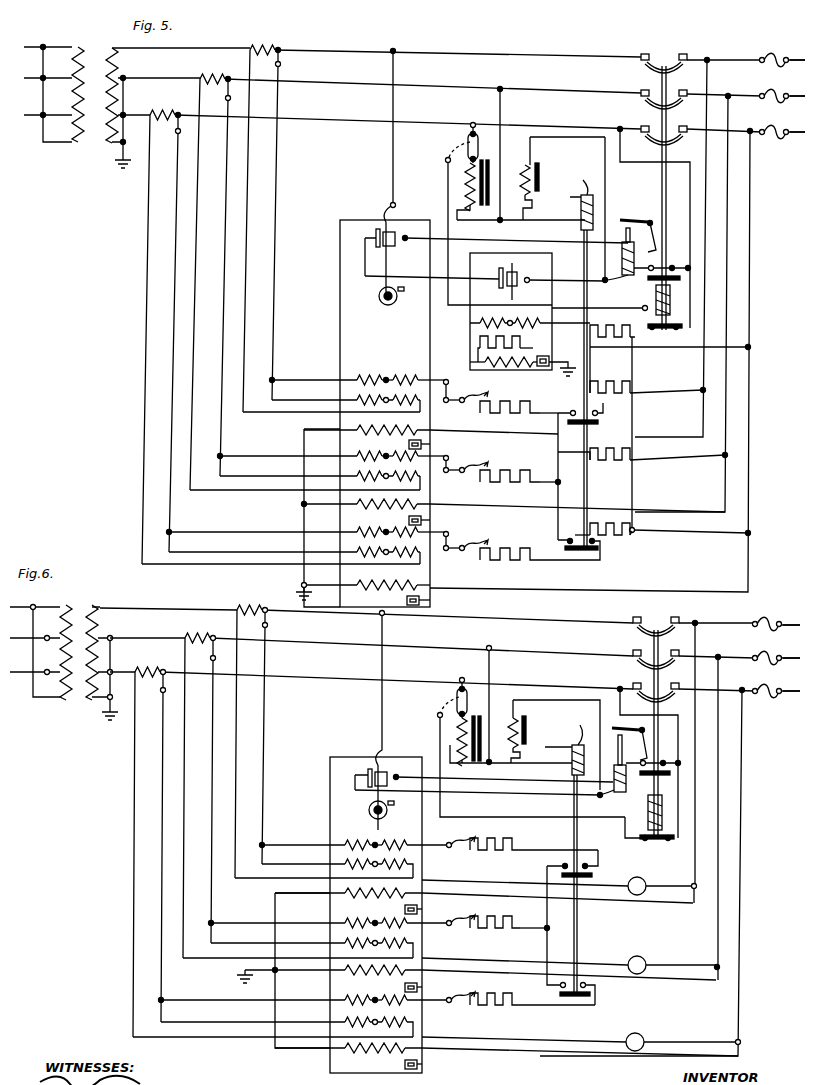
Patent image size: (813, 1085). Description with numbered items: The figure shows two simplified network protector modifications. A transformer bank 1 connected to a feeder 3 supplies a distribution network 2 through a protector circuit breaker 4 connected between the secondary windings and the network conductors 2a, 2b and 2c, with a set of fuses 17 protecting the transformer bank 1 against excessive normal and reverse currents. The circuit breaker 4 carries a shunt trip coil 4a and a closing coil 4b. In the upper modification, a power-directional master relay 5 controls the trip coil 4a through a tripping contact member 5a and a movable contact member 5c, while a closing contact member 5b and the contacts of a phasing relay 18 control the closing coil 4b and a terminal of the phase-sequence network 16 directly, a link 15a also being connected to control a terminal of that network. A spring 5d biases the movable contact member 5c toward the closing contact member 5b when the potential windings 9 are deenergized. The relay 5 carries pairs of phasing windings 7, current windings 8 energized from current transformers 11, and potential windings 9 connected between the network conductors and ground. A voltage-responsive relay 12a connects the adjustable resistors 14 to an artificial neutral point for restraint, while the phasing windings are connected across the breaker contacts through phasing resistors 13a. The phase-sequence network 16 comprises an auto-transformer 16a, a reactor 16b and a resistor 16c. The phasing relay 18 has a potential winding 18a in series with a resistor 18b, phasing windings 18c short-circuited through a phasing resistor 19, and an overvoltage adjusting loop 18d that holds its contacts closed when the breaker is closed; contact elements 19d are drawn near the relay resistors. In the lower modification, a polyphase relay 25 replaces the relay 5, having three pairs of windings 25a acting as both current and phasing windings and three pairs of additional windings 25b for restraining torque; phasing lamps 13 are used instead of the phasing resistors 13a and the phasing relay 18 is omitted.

In FIG. 5, the transformer bank 1 is at (98, 40).
In FIG. 6, the transformer bank 1 is at (86, 600).
In FIG. 5, the distribution network 2 is at (806, 48).
In FIG. 6, the distribution network 2 is at (794, 614).
In FIG. 5, the network conductor 2a is at (709, 58).
In FIG. 6, the network conductor 2a is at (703, 622).
In FIG. 5, the network conductor 2b is at (729, 94).
In FIG. 6, the network conductor 2b is at (710, 655).
In FIG. 5, the network conductor 2c is at (751, 130).
In FIG. 6, the network conductor 2c is at (745, 690).
In FIG. 5, the feeder 3 is at (40, 40).
In FIG. 6, the feeder 3 is at (26, 602).
In FIG. 5, the protector circuit breaker 4 is at (668, 44).
In FIG. 6, the protector circuit breaker 4 is at (661, 612).
In FIG. 5, the shunt trip coil 4a is at (626, 276).
In FIG. 6, the shunt trip coil 4a is at (612, 792).
In FIG. 5, the closing coil 4b is at (660, 300).
In FIG. 6, the closing coil 4b is at (648, 810).
In FIG. 5, the power-directional master relay 5 is at (330, 252).
In FIG. 5, the tripping contact member 5a is at (405, 236).
In FIG. 5, the closing contact member 5b is at (376, 236).
In FIG. 5, the movable contact member 5c is at (385, 248).
In FIG. 5, the spring 5d is at (379, 296).
In FIG. 5, the phasing windings 7 is at (400, 378).
In FIG. 5, the current windings 8 is at (380, 398).
In FIG. 5, the potential winding 9 is at (362, 434).
In FIG. 5, the current transformers 11 is at (222, 70).
In FIG. 6, the current transformers 11 is at (217, 602).
In FIG. 5, the voltage-responsive relay 12a is at (583, 186).
In FIG. 6, the voltage-responsive relay 12a is at (581, 732).
In FIG. 5, the phasing lamps 13 is at (580, 390).
In FIG. 6, the phasing lamps 13 is at (645, 867).
In FIG. 5, the phasing resistors 13a is at (608, 395).
In FIG. 5, the adjustable resistors 14 is at (508, 412).
In FIG. 6, the adjustable resistors 14 is at (523, 912).
In FIG. 5, the link 15a is at (468, 145).
In FIG. 6, the link 15a is at (457, 700).
In FIG. 5, the phase-sequence network 16 is at (522, 116).
In FIG. 6, the phase-sequence network 16 is at (508, 706).
In FIG. 5, the auto-transformer 16a is at (466, 184).
In FIG. 6, the auto-transformer 16a is at (458, 740).
In FIG. 5, the reactor 16b is at (525, 176).
In FIG. 6, the reactor 16b is at (516, 730).
In FIG. 5, the resistor 16c is at (580, 212).
In FIG. 6, the resistor 16c is at (571, 756).
In FIG. 5, the fuses 17 is at (774, 87).
In FIG. 6, the fuses 17 is at (767, 649).
In FIG. 5, the phasing relay 18 is at (462, 265).
In FIG. 5, the potential winding 18a is at (470, 364).
In FIG. 5, the resistor 18b is at (480, 342).
In FIG. 5, the phasing windings 18c is at (538, 320).
In FIG. 5, the overvoltage adjusting loop 18d is at (549, 360).
In FIG. 5, the phasing resistor 19 is at (600, 343).
In FIG. 5, the contact 19d is at (432, 443).
In FIG. 6, the polyphase relay 25 is at (322, 802).
In FIG. 6, the pairs of windings 25a is at (372, 862).
In FIG. 6, the additional windings 25b is at (390, 843).